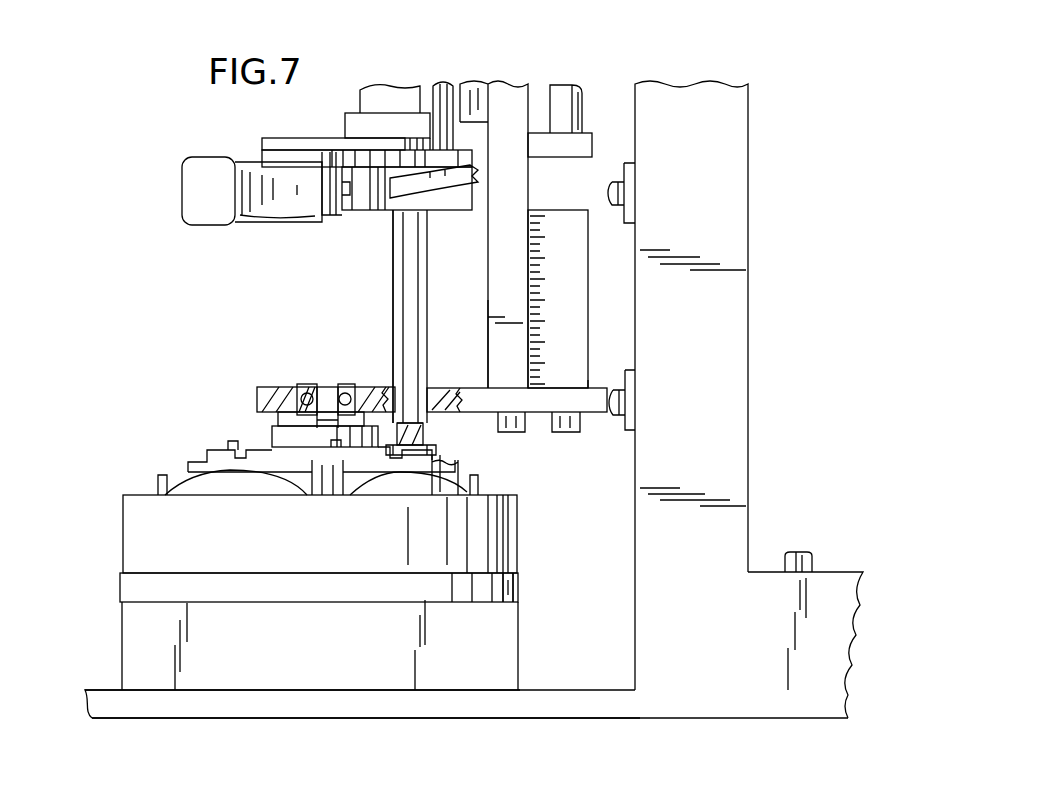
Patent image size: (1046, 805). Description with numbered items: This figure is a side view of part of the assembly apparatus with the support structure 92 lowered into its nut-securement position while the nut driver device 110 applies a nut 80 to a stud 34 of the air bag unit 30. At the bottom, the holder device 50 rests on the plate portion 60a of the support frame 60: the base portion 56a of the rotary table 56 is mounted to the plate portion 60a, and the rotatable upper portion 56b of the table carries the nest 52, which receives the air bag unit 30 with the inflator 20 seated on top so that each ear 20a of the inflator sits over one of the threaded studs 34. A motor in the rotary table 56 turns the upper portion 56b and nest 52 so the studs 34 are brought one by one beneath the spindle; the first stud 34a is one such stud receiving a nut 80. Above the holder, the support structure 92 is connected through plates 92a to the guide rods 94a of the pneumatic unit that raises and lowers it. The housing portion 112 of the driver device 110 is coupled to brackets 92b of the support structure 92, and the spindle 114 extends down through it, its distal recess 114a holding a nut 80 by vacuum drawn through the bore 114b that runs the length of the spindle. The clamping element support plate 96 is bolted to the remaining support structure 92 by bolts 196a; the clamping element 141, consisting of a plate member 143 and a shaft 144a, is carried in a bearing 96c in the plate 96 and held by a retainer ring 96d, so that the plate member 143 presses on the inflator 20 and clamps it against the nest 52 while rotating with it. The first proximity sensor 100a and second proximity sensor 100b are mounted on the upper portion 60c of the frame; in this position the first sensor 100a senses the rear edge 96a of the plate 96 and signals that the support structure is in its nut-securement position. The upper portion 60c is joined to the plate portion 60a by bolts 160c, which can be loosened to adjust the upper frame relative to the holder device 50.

The inflator 20 is at (270, 445).
The ear 20a is at (412, 462).
The air bag unit 30 is at (190, 472).
The threaded studs 34 is at (230, 446).
The first stud 34a is at (408, 425).
The holder device 50 is at (313, 566).
The nest 52 is at (140, 530).
The rotary table 56 is at (133, 621).
The base portion 56a is at (135, 653).
The rotatable upper portion 56b is at (515, 585).
The support frame 60 is at (466, 714).
The plate portion 60a is at (245, 707).
The upper portion 60c is at (748, 372).
The nut 80 is at (430, 447).
The support structure 92 is at (568, 397).
The plates 92a is at (583, 144).
The brackets 92b is at (470, 97).
The guide rods 94a is at (582, 112).
The clamping element support plate 96 is at (500, 395).
The rear edge 96a is at (606, 412).
The bearing 96c is at (352, 392).
The retainer ring 96d is at (318, 388).
The first proximity sensor 100a is at (625, 400).
The second proximity sensor 100b is at (625, 187).
The nut driver device 110 is at (331, 116).
The housing portion 112 is at (365, 90).
The spindle 114 is at (395, 262).
The recess 114a is at (395, 452).
The bore 114b is at (402, 422).
The clamping element 141 is at (279, 374).
The plate member 143 is at (278, 428).
The shaft 144a is at (306, 388).
The bolts 160c is at (802, 555).
The bolts 196a is at (535, 433).